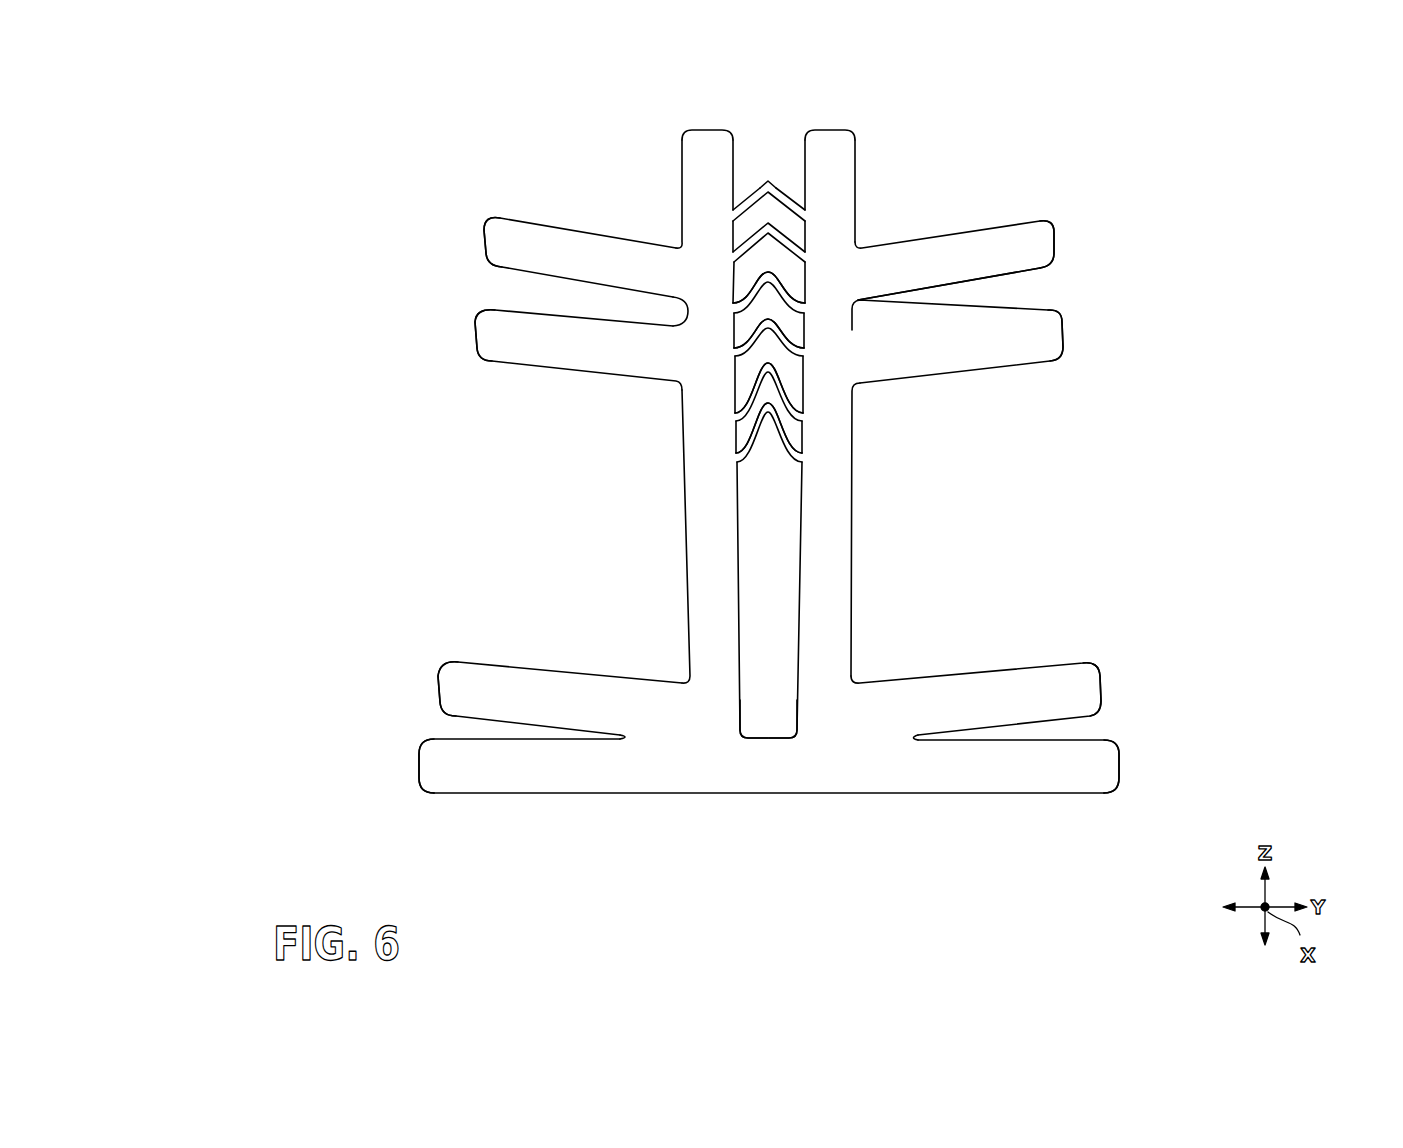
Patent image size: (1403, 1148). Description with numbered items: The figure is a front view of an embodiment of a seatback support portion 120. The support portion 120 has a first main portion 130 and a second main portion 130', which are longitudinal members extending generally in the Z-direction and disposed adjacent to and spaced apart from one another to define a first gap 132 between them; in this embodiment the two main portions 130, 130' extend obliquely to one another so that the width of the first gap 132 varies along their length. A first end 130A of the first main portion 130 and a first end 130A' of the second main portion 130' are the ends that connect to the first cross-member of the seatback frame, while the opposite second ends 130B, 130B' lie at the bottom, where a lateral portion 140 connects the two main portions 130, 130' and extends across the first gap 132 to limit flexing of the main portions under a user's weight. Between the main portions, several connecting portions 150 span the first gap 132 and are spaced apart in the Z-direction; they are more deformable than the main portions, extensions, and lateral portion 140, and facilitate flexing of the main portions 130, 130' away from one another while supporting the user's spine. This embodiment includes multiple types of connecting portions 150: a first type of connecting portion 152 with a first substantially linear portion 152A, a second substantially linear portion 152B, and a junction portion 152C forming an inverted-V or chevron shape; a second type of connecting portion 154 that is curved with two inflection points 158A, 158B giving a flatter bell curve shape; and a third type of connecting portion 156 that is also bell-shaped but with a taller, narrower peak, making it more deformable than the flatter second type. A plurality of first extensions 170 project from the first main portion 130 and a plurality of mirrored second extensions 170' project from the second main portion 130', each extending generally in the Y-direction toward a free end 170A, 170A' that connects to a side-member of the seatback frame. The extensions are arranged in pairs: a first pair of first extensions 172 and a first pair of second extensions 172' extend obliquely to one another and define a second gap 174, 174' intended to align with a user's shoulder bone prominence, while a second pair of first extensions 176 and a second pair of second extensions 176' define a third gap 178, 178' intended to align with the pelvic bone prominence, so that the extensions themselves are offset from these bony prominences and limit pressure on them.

The support portion 120 is at (1098, 110).
The first main portion 130 is at (685, 489).
The second main portion 130' is at (861, 478).
The first end of first main portion 130A is at (669, 119).
The first end of second main portion 130A' is at (857, 108).
The second end of first main portion 130B is at (714, 789).
The second end of second main portion 130B' is at (838, 789).
The first gap 132 is at (775, 575).
The lateral portion 140 is at (775, 782).
The connecting portions 150 is at (869, 273).
The first type of connecting portion 152 is at (806, 198).
The first substantially linear portion 152A is at (750, 177).
The second substantially linear portion 152B is at (783, 178).
The junction portion 152C is at (768, 178).
The second type of connecting portion 154 is at (805, 251).
The third type of connecting portion 156 is at (765, 400).
The inflection point 158A is at (738, 278).
The inflection point 158B is at (748, 298).
The first extensions 170 is at (464, 474).
The second extensions 170' is at (1081, 480).
The free end 170A is at (398, 487).
The free end 170A' is at (1140, 480).
The first pair of first extensions 172 is at (509, 319).
The first pair of second extensions 172' is at (1059, 302).
The second gap 174 is at (512, 306).
The second gap 174' is at (1062, 284).
The second pair of first extensions 176 is at (461, 740).
The second pair of second extensions 176' is at (1081, 722).
The third gap 178 is at (433, 724).
The third gap 178' is at (1113, 715).